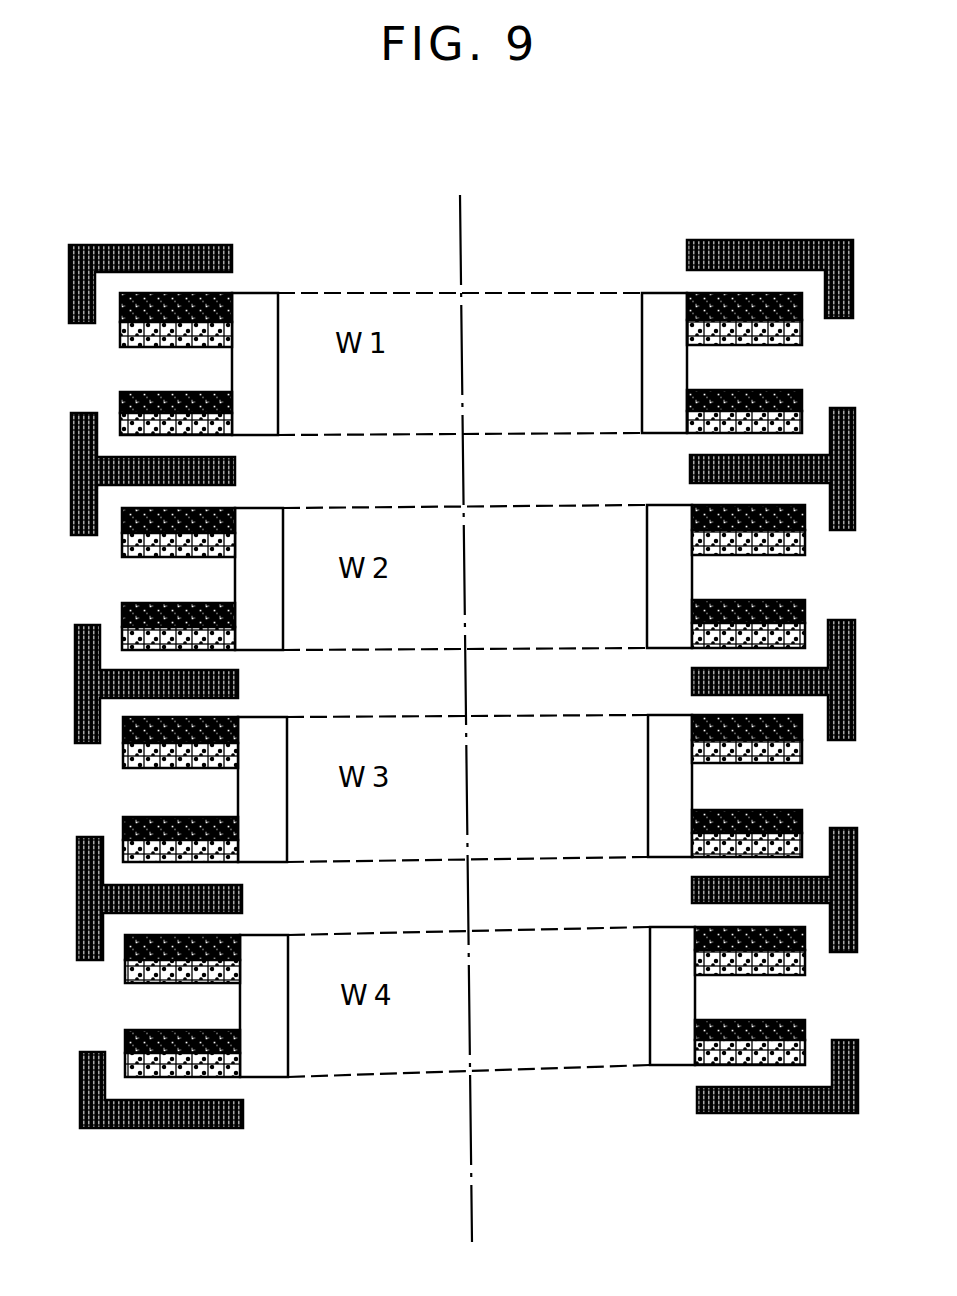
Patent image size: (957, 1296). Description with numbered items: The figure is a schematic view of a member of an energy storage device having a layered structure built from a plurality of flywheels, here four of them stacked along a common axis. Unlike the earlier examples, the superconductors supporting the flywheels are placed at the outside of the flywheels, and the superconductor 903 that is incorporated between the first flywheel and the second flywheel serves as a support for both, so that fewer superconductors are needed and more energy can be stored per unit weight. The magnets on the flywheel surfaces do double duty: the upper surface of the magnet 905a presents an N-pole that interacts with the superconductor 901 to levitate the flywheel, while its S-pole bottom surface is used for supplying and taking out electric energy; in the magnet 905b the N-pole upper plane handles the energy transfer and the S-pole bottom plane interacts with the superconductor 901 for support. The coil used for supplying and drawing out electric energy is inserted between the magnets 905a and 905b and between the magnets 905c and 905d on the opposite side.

The superconductor 901 is at (157, 245).
The superconductor 903 is at (235, 462).
The magnet 905a is at (232, 293).
The magnet 905b is at (232, 400).
The magnet 905c is at (690, 292).
The magnet 905d is at (688, 405).